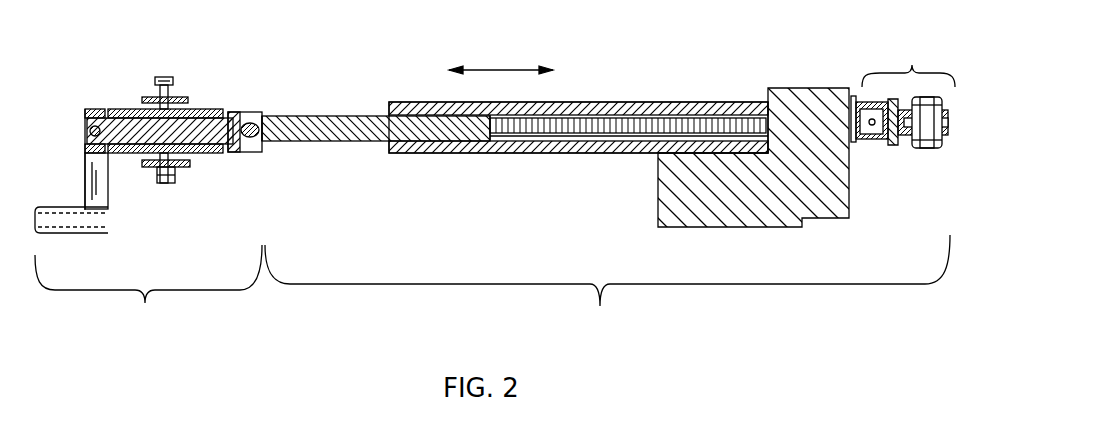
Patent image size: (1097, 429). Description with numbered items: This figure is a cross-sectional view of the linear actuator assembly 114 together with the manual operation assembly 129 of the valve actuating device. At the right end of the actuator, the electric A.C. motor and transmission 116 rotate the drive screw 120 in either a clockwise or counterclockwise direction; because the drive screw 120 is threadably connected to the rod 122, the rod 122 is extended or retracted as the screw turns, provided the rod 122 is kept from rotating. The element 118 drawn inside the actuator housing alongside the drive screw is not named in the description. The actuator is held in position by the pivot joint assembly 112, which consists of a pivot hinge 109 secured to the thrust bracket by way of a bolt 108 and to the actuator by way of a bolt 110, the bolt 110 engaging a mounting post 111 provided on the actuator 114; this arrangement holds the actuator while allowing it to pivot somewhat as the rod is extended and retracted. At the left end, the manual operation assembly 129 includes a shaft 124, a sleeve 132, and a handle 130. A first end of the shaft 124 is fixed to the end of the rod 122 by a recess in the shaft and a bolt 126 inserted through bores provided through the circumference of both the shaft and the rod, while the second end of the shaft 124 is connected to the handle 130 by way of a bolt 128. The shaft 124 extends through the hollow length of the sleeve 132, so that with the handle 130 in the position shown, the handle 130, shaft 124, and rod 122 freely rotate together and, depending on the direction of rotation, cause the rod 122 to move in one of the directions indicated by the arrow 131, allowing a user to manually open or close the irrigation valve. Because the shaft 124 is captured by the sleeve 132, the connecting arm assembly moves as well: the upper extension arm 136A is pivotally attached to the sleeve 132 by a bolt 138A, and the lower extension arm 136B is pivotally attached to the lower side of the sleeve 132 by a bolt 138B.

The bolt 108 is at (927, 97).
The pivot hinge 109 is at (895, 143).
The bolt 110 is at (872, 127).
The mounting post 111 is at (855, 98).
The pivot joint assembly 112 is at (908, 64).
The linear actuator assembly 114 is at (607, 288).
The electric A.C. motor and transmission 116 is at (757, 228).
The bearing rack 118 is at (540, 155).
The drive screw 120 is at (635, 118).
The rod 122 is at (313, 116).
The shaft 124 is at (250, 153).
The bolt 126 is at (263, 147).
The bolt 128 is at (97, 112).
The manual operation assembly 129 is at (148, 288).
The handle 130 is at (75, 233).
The arrow 131 is at (495, 63).
The sleeve 132 is at (207, 110).
The upper extension arm 136A is at (183, 100).
The lower extension arm 136B is at (190, 162).
The bolt 138A is at (163, 77).
The bolt 138B is at (165, 183).